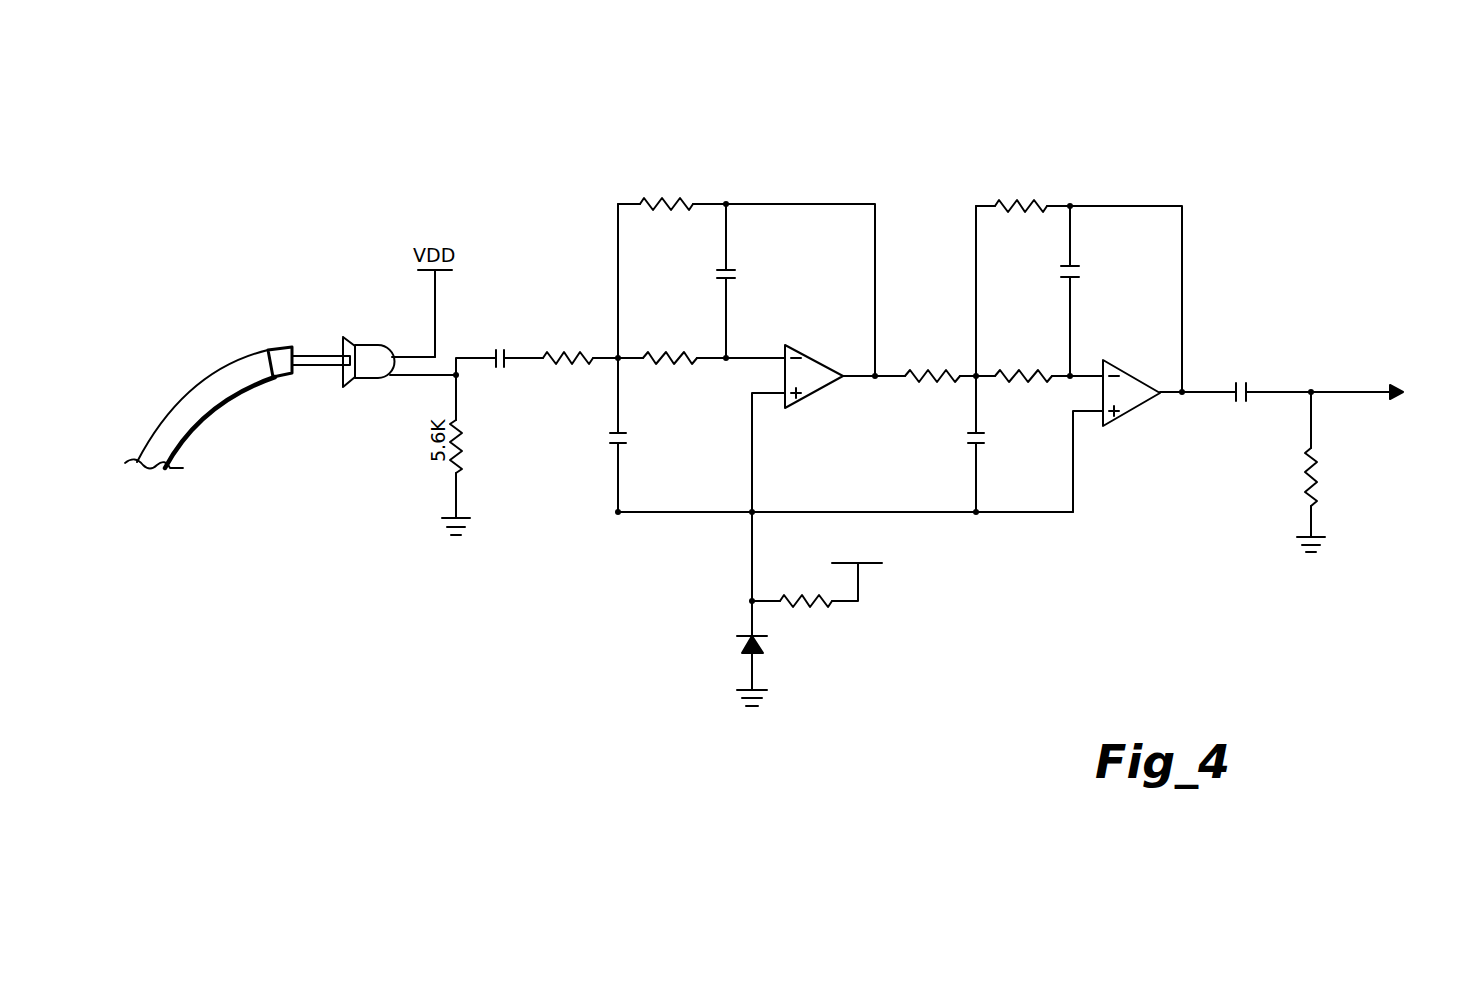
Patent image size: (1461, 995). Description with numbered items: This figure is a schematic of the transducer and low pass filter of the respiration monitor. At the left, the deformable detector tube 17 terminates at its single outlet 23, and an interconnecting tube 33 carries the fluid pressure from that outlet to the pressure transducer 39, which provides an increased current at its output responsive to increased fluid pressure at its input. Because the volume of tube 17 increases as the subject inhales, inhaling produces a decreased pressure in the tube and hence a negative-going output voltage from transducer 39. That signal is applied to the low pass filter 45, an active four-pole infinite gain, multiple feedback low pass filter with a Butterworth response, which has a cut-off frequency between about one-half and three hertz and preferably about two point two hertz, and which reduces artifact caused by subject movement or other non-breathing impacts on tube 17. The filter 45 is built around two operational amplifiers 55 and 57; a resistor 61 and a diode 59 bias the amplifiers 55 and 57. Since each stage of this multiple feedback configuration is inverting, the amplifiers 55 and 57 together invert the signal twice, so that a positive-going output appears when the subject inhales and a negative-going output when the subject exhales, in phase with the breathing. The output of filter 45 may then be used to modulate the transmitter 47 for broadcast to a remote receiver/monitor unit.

The tube 17 is at (190, 409).
The interconnecting tube 33 is at (202, 384).
The outlet 23 is at (268, 368).
The pressure transducer 39 is at (370, 370).
The low pass filter 45 is at (951, 404).
The transmitter 47 is at (1379, 372).
The amplifier 55 is at (810, 358).
The amplifier 57 is at (1142, 386).
The diode 59 is at (745, 648).
The resistor 61 is at (833, 603).